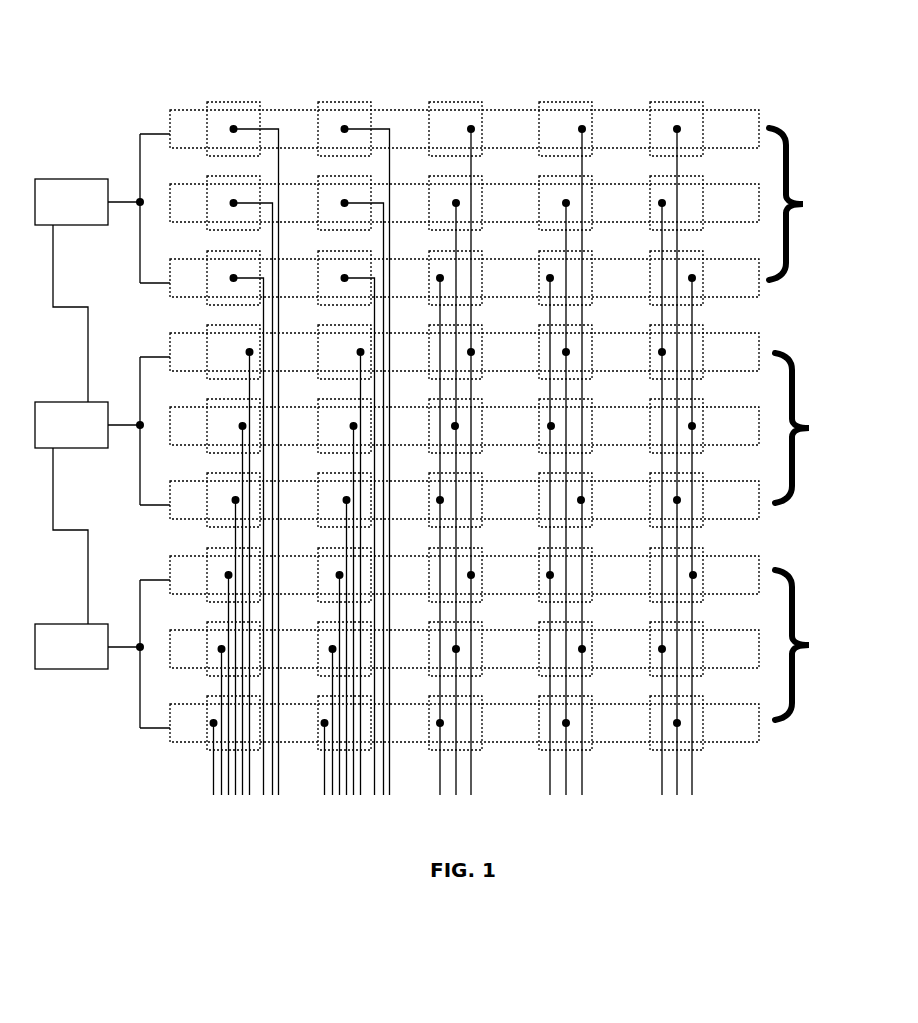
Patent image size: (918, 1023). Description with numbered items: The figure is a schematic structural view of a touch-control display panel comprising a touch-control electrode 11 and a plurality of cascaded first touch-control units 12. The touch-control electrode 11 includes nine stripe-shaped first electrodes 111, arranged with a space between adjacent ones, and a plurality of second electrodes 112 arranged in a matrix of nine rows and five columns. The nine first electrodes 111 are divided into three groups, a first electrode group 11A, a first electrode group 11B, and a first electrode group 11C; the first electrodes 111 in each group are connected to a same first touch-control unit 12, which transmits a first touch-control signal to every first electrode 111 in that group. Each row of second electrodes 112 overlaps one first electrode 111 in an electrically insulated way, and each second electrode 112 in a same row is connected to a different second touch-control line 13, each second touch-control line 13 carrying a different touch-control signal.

The touch-control electrode 11 is at (242, 60).
The first electrode 111 is at (403, 113).
The second electrode 112 is at (558, 107).
The first touch-control unit 12 is at (80, 197).
The second touch-control line 13 is at (693, 773).
The first electrode group 11A is at (813, 204).
The first electrode group 11B is at (818, 428).
The first electrode group 11C is at (818, 645).